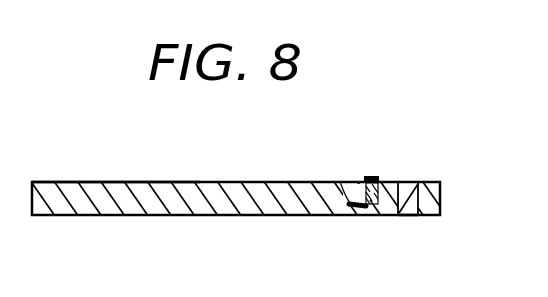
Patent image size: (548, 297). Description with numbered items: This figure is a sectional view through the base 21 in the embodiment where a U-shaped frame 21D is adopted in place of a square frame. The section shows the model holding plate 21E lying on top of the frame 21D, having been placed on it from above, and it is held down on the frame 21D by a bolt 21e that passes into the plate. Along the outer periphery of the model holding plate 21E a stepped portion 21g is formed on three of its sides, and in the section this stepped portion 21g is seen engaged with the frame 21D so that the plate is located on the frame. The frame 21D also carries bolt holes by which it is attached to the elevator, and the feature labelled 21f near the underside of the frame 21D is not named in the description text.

The base 21 is at (245, 175).
The model holding plate 21E is at (163, 182).
The bolt 21e is at (370, 176).
The stepped portion 21g is at (340, 182).
The U-shaped frame 21D is at (390, 182).
The bottom projection 21f is at (407, 215).